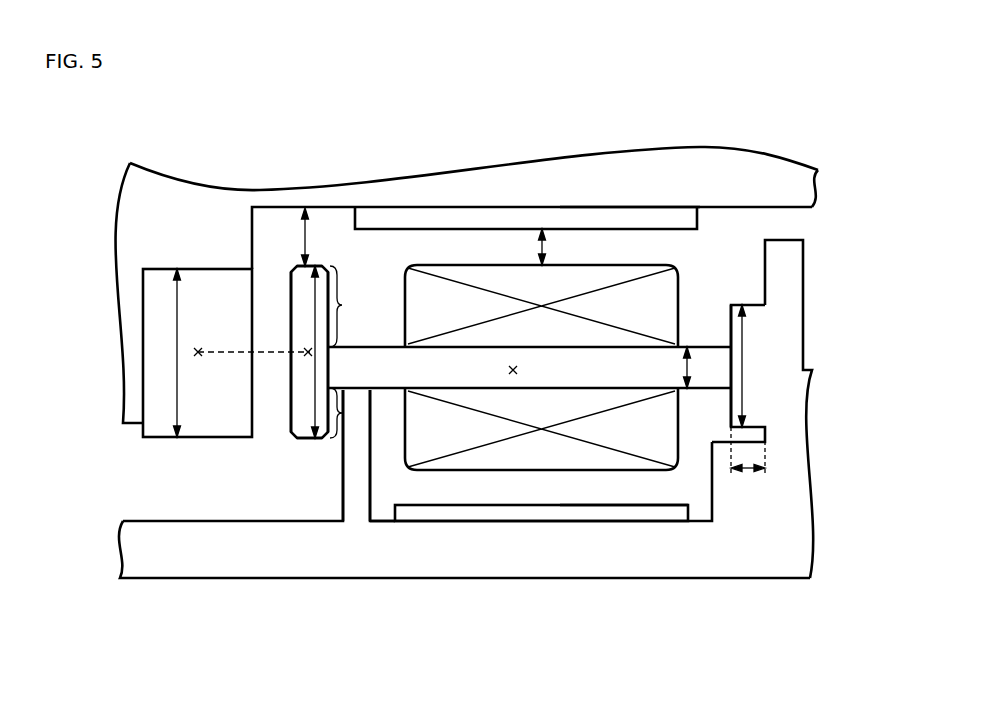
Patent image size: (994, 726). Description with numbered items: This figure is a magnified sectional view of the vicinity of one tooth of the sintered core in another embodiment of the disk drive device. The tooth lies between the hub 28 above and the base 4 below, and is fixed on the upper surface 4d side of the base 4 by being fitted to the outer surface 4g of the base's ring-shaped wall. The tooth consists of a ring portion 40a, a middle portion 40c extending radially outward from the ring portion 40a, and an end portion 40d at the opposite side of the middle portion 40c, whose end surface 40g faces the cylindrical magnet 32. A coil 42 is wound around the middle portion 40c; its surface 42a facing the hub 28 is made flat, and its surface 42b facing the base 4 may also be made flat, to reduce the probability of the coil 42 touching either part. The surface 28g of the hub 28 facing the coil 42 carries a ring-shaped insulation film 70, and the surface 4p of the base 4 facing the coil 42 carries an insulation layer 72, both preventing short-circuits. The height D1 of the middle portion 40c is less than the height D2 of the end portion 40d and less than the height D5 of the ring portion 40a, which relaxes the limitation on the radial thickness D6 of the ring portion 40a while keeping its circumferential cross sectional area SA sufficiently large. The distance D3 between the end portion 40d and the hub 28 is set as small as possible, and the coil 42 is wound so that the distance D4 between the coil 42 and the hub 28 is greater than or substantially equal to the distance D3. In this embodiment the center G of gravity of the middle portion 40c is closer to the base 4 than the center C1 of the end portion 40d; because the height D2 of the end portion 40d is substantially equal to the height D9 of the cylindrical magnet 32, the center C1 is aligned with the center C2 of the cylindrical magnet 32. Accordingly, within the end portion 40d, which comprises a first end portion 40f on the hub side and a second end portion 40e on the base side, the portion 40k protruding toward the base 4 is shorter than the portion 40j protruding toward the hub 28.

The base 4 is at (150, 562).
The upper surface 4d is at (380, 512).
The outer surface 4g is at (357, 488).
The surface 4p is at (635, 510).
The hub 28 is at (147, 178).
The surface 28g is at (604, 212).
The cylindrical magnet 32 is at (160, 314).
The ring portion 40a is at (755, 417).
The middle portion 40c is at (708, 372).
The end portion 40d is at (302, 415).
The second end portion 40e is at (308, 440).
The first end portion 40f is at (316, 266).
The end surface 40g is at (290, 300).
The portion protruding on the hub side 40j is at (354, 352).
The portion protruding on the base side 40k is at (350, 422).
The coil 42 is at (541, 369).
The surface of the coil facing the hub 42a is at (463, 265).
The surface of the coil facing the base 42b is at (443, 473).
The insulation film 70 is at (400, 218).
The insulation layer 72 is at (602, 510).
The center of the end portion C1 is at (308, 360).
The center of the cylindrical magnet C2 is at (198, 358).
The center of gravity G is at (513, 378).
The cross sectional area SA is at (752, 348).
The height of the middle portion D1 is at (690, 365).
The height of the end portion D2 is at (313, 293).
The distance between the end portion and the hub D3 is at (305, 238).
The distance between the coils and the hub D4 is at (543, 242).
The height of the ring portion D5 is at (732, 328).
The thickness of the ring portion D6 is at (750, 472).
The height of the cylindrical magnet D9 is at (178, 303).